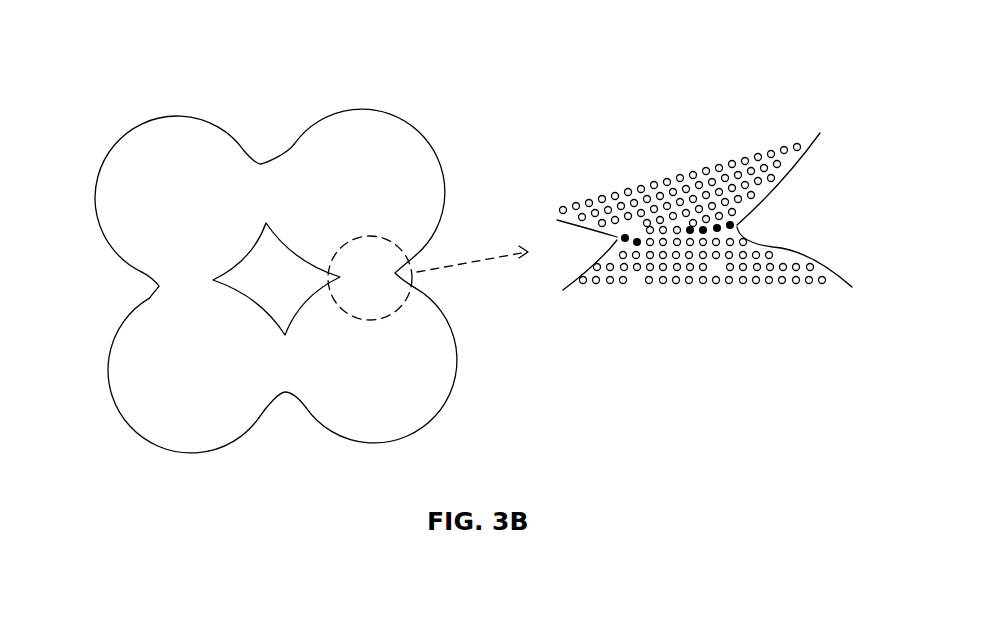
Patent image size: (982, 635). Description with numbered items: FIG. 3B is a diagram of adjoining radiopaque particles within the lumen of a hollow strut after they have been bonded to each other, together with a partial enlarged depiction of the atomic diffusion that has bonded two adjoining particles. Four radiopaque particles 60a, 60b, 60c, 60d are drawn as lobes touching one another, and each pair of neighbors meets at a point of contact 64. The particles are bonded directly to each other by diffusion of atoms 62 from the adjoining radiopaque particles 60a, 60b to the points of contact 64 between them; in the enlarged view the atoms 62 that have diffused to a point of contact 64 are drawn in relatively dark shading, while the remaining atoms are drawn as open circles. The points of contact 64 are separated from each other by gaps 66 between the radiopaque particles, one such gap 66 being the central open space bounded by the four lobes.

The radiopaque particle 60a is at (428, 137).
The radiopaque particle 60b is at (459, 366).
The radiopaque particle 60c is at (108, 358).
The radiopaque particle 60d is at (114, 149).
The atoms 62 is at (620, 236).
The points of contact 64 is at (262, 149).
The gaps 66 is at (262, 262).